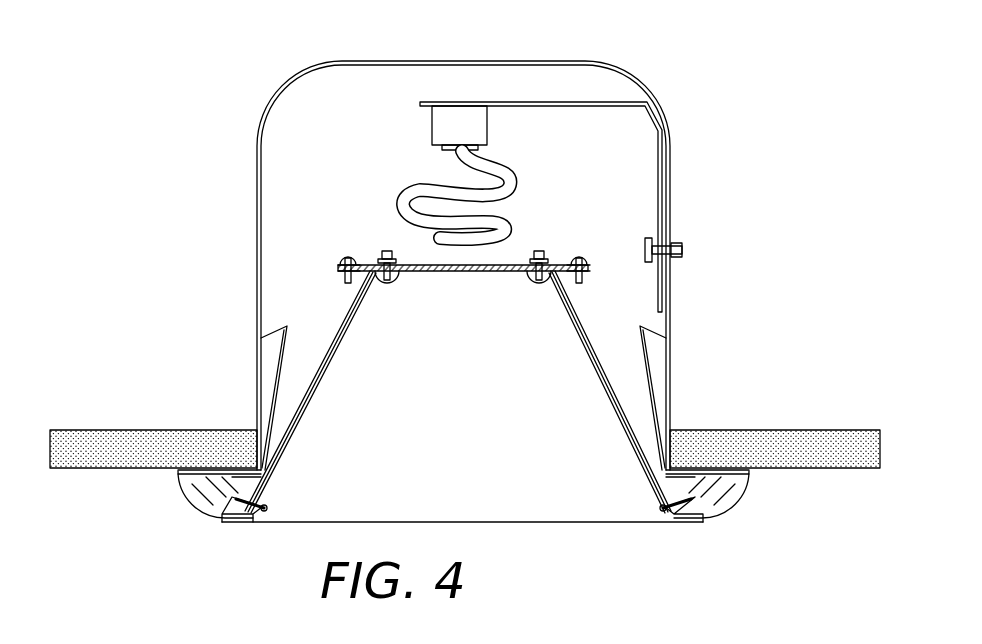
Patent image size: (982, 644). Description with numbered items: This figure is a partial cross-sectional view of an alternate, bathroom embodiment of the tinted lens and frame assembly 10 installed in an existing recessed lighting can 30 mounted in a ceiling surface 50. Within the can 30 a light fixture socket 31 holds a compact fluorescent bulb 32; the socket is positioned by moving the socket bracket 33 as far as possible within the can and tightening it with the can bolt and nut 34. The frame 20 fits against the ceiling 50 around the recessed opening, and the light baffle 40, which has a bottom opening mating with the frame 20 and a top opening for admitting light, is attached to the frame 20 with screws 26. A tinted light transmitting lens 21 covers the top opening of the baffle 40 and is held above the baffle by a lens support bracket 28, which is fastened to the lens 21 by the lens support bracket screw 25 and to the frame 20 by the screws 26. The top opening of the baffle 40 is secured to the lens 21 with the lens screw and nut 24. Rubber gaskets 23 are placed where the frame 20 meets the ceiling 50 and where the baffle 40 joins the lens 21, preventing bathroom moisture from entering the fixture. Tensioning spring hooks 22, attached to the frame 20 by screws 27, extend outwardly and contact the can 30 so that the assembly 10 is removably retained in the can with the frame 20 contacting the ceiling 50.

The tinted lens and frame assembly 10 is at (243, 555).
The frame 20 is at (743, 472).
The tinted light transmitting lens 21 is at (445, 268).
The tensioning spring hooks 22 is at (275, 328).
The rubber gaskets 23 is at (520, 272).
The lens screw and nut 24 is at (538, 285).
The lens support bracket screw 25 is at (343, 257).
The screws 26 is at (270, 505).
The screws 27 is at (248, 477).
The lens support bracket 28 is at (342, 320).
The recessed lighting can 30 is at (257, 165).
The light fixture socket 31 is at (485, 122).
The compact fluorescent bulb 32 is at (403, 213).
The socket bracket 33 is at (605, 107).
The can bolt and nut 34 is at (652, 265).
The light baffle 40 is at (670, 478).
The ceiling surface 50 is at (187, 428).